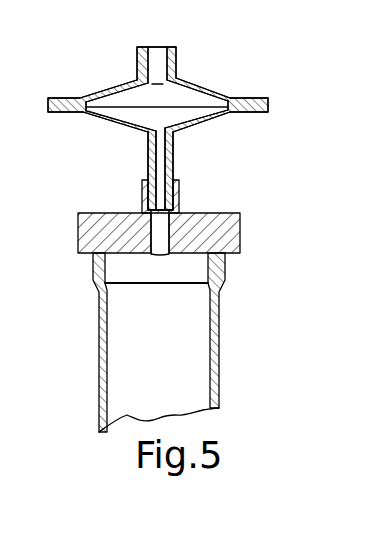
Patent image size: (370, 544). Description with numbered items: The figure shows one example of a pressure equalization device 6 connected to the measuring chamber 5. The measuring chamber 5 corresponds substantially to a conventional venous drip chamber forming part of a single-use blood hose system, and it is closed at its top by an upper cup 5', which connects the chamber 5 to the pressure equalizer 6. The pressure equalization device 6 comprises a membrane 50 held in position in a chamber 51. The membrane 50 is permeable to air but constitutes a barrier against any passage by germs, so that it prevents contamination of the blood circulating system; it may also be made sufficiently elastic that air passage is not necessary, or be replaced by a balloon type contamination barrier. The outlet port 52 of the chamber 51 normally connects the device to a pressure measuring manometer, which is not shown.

The measuring chamber 5 is at (159, 342).
The upper cup 5' is at (156, 215).
The pressure equalization device 6 is at (158, 112).
The membrane 50 is at (203, 107).
The chamber 51 is at (108, 83).
The outlet port 52 is at (158, 54).